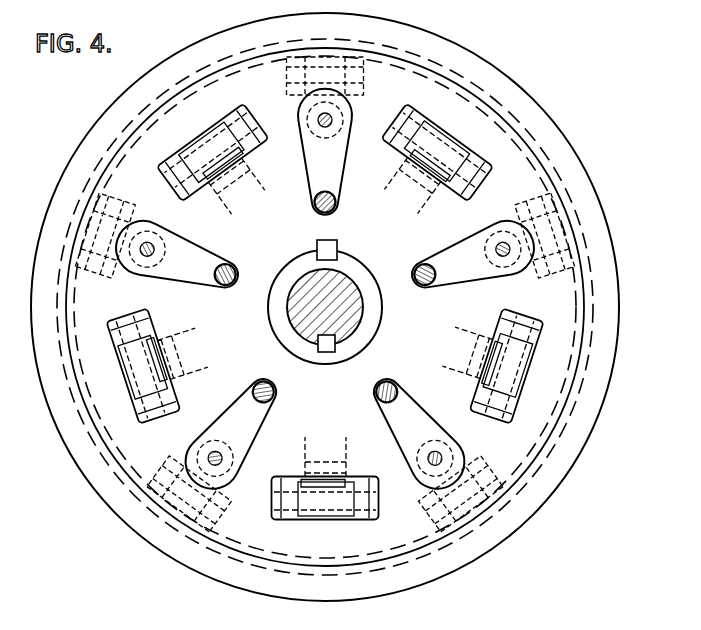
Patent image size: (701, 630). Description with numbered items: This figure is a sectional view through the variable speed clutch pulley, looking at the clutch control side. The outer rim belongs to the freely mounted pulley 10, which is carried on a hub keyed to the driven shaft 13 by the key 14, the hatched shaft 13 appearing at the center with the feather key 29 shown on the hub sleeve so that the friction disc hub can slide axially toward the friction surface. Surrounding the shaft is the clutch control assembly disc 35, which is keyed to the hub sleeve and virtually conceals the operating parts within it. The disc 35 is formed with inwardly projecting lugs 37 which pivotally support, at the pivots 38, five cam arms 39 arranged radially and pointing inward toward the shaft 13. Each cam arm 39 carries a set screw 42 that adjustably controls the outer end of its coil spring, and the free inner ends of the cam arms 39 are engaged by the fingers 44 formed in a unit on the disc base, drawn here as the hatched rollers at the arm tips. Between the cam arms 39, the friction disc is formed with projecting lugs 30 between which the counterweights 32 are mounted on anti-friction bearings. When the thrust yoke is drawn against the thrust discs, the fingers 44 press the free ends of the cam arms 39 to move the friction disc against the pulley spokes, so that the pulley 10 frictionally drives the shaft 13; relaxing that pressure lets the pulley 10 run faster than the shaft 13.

The pulley 10 is at (478, 70).
The driven shaft 13 is at (350, 300).
The key 14 is at (325, 353).
The feather key 29 is at (333, 242).
The projecting lugs 30 is at (514, 405).
The counterweights 32 is at (212, 150).
The clutch control assembly disc 35 is at (606, 318).
The inwardly projecting lugs 37 is at (287, 85).
The pivot 38 is at (330, 68).
The cam arms 39 is at (312, 165).
The set screws 42 is at (319, 120).
The fingers 44 is at (313, 205).